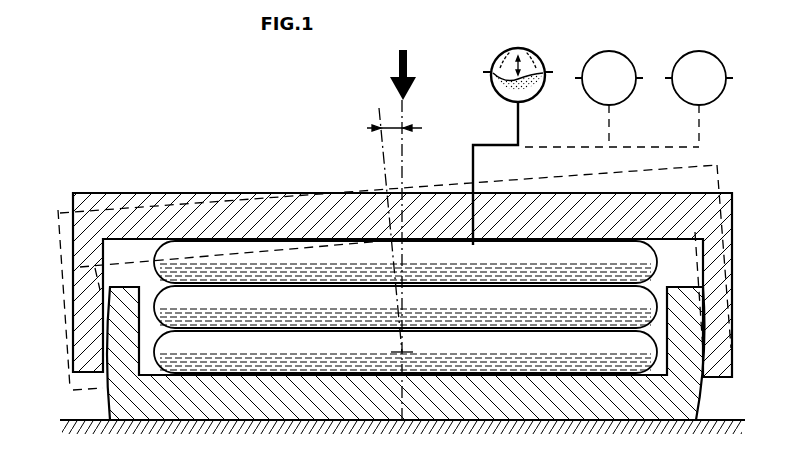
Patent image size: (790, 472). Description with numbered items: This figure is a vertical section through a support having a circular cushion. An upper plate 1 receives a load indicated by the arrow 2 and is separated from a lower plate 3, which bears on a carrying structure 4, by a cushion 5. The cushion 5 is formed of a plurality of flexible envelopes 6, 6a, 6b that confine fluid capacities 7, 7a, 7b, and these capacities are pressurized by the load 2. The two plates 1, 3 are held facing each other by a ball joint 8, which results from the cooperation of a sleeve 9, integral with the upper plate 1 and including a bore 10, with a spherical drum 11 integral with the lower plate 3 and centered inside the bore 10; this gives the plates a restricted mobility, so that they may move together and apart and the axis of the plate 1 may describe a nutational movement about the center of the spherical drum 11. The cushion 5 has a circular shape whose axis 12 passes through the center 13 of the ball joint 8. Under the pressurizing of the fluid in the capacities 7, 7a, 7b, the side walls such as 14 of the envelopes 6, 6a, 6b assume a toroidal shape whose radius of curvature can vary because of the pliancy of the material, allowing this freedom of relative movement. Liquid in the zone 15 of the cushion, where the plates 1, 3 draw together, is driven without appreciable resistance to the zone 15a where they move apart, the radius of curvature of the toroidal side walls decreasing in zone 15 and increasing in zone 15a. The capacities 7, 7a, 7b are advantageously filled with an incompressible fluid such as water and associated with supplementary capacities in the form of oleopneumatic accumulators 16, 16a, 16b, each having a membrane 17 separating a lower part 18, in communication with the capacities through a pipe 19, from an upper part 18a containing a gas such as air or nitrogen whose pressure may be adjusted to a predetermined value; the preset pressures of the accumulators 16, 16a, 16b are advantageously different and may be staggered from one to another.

The upper plate 1 is at (147, 218).
The load arrow 2 is at (403, 62).
The lower plate 3 is at (638, 402).
The carrying structure 4 is at (718, 422).
The cushion 5 is at (657, 312).
The flexible envelope 6 is at (155, 260).
The flexible envelope 6a is at (154, 305).
The flexible envelope 6b is at (155, 350).
The fluid capacity 7 is at (405, 262).
The fluid capacity 7a is at (405, 307).
The fluid capacity 7b is at (405, 352).
The ball joint 8 is at (707, 293).
The sleeve 9 is at (727, 238).
The bore 10 is at (702, 355).
The spherical drum 11 is at (703, 395).
The axis 12 is at (405, 155).
The center 13 is at (402, 353).
The side wall 14 is at (659, 264).
The zone of the cushion 15 is at (225, 303).
The zone of the cushion 15a is at (620, 306).
The oleopneumatic accumulator 16 is at (535, 103).
The oleopneumatic accumulator 16a is at (622, 106).
The oleopneumatic accumulator 16b is at (711, 106).
The membrane 17 is at (508, 65).
The lower part 18 is at (498, 100).
The upper part 18a is at (527, 67).
The pipe 19 is at (515, 130).